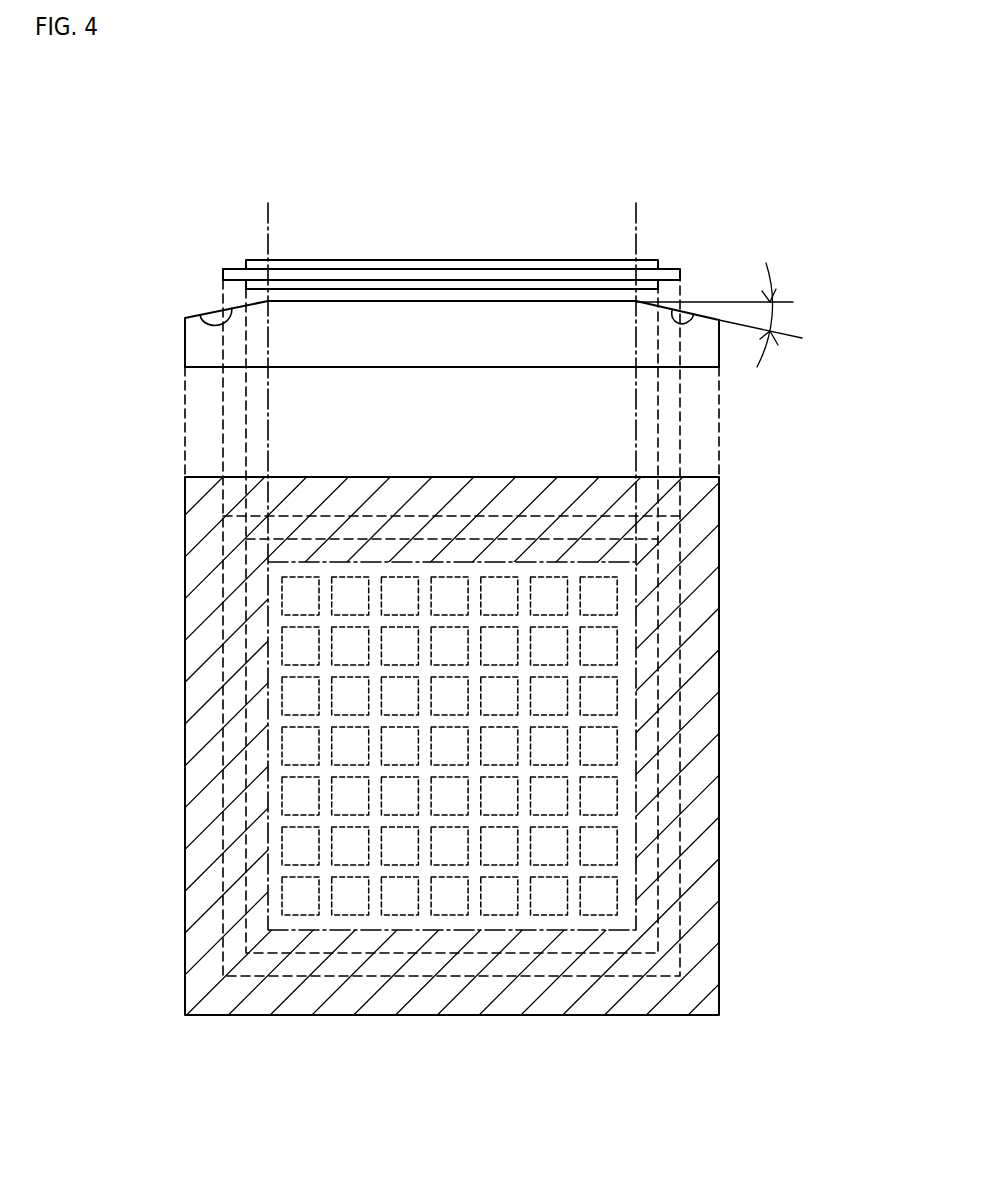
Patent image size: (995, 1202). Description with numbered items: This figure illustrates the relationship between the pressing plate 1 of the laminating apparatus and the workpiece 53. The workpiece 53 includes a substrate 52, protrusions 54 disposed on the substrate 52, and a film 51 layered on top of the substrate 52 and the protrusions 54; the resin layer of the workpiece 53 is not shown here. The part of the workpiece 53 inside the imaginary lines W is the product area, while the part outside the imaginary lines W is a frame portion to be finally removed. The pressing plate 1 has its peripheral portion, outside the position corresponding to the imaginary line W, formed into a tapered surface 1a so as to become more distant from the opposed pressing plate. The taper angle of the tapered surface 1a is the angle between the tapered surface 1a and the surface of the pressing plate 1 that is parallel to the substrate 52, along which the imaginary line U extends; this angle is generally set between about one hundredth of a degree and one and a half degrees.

The pressing plate 1 is at (197, 343).
The tapered surface 1a is at (193, 317).
The film 51 is at (432, 287).
The substrate 52 is at (358, 277).
The workpiece 53 is at (451, 576).
The protrusions 54 is at (602, 802).
The imaginary line W is at (270, 220).
The imaginary line U is at (787, 302).